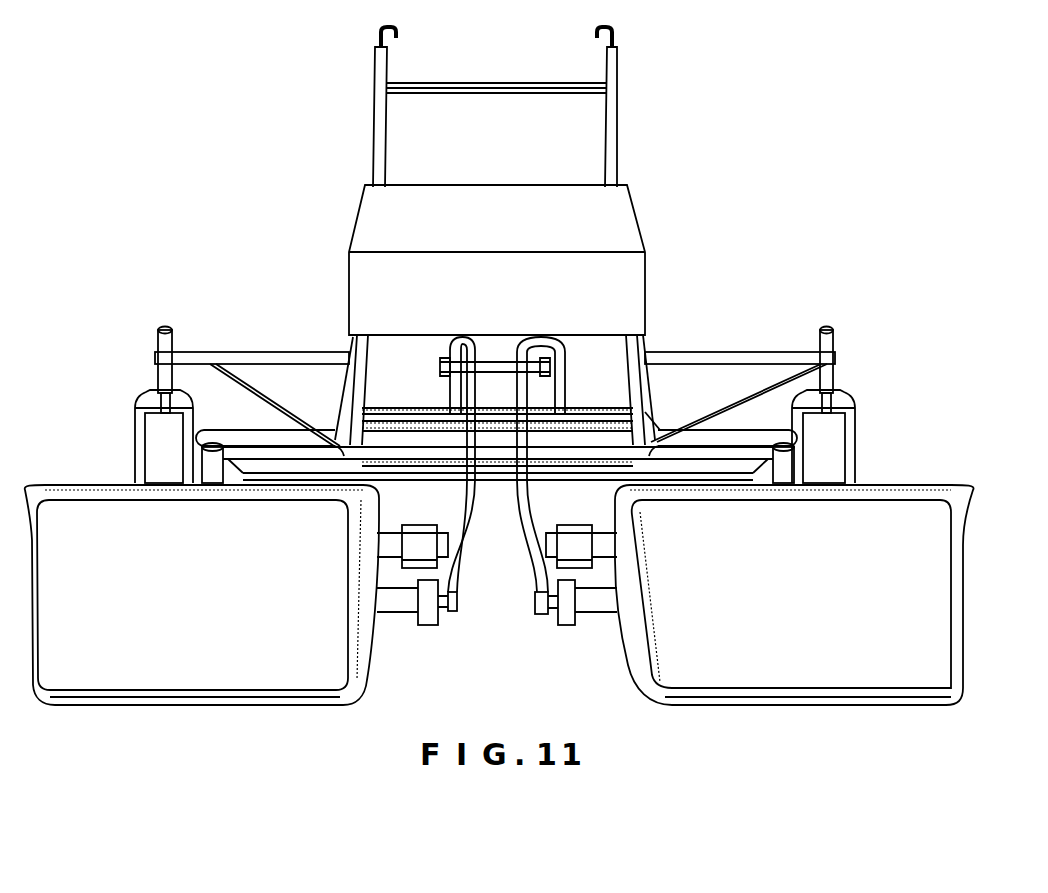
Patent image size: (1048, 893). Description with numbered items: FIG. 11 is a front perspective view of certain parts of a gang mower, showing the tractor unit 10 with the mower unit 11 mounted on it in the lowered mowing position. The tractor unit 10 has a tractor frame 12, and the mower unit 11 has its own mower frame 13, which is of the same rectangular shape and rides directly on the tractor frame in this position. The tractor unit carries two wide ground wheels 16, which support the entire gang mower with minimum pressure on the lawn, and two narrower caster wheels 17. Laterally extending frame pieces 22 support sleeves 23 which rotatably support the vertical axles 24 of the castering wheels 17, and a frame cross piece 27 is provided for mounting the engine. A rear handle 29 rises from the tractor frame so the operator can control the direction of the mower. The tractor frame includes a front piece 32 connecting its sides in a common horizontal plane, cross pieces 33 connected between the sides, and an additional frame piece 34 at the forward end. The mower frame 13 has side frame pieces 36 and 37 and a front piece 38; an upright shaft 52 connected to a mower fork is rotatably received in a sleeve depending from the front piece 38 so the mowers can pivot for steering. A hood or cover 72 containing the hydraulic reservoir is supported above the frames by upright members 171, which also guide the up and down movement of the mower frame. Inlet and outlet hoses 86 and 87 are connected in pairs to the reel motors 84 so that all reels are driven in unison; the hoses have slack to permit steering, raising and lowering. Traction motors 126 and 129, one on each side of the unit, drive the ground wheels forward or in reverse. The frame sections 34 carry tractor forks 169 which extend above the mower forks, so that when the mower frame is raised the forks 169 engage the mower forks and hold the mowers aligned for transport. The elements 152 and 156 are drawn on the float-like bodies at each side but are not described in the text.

The tractor unit 10 is at (668, 330).
The mower unit 11 is at (340, 392).
The tractor frame 12 is at (732, 348).
The mower frame 13 is at (656, 395).
The ground wheels 16 is at (250, 431).
The caster wheels 17 is at (143, 477).
The laterally extending frame pieces 22 is at (226, 355).
The sleeves 23 is at (834, 338).
The axles 24 is at (838, 398).
The frame cross piece 27 is at (757, 382).
The rear handle 29 is at (606, 145).
The front piece 32 is at (377, 474).
The cross pieces 33 is at (422, 437).
The additional frame piece 34 is at (293, 481).
The side frame piece 36 is at (643, 422).
The side frame piece 37 is at (345, 427).
The front piece 38 is at (273, 459).
The upright shaft 52 is at (794, 477).
The hood or cover 72 is at (622, 213).
The reel motors 84 is at (568, 627).
The inlet hose 86 is at (517, 556).
The outlet hose 87 is at (535, 602).
The traction motor 126 is at (578, 526).
The traction motor 129 is at (424, 527).
The float 152 is at (372, 633).
The float bottom 156 is at (283, 708).
The tractor forks 169 is at (757, 485).
The upright members 171 is at (368, 357).